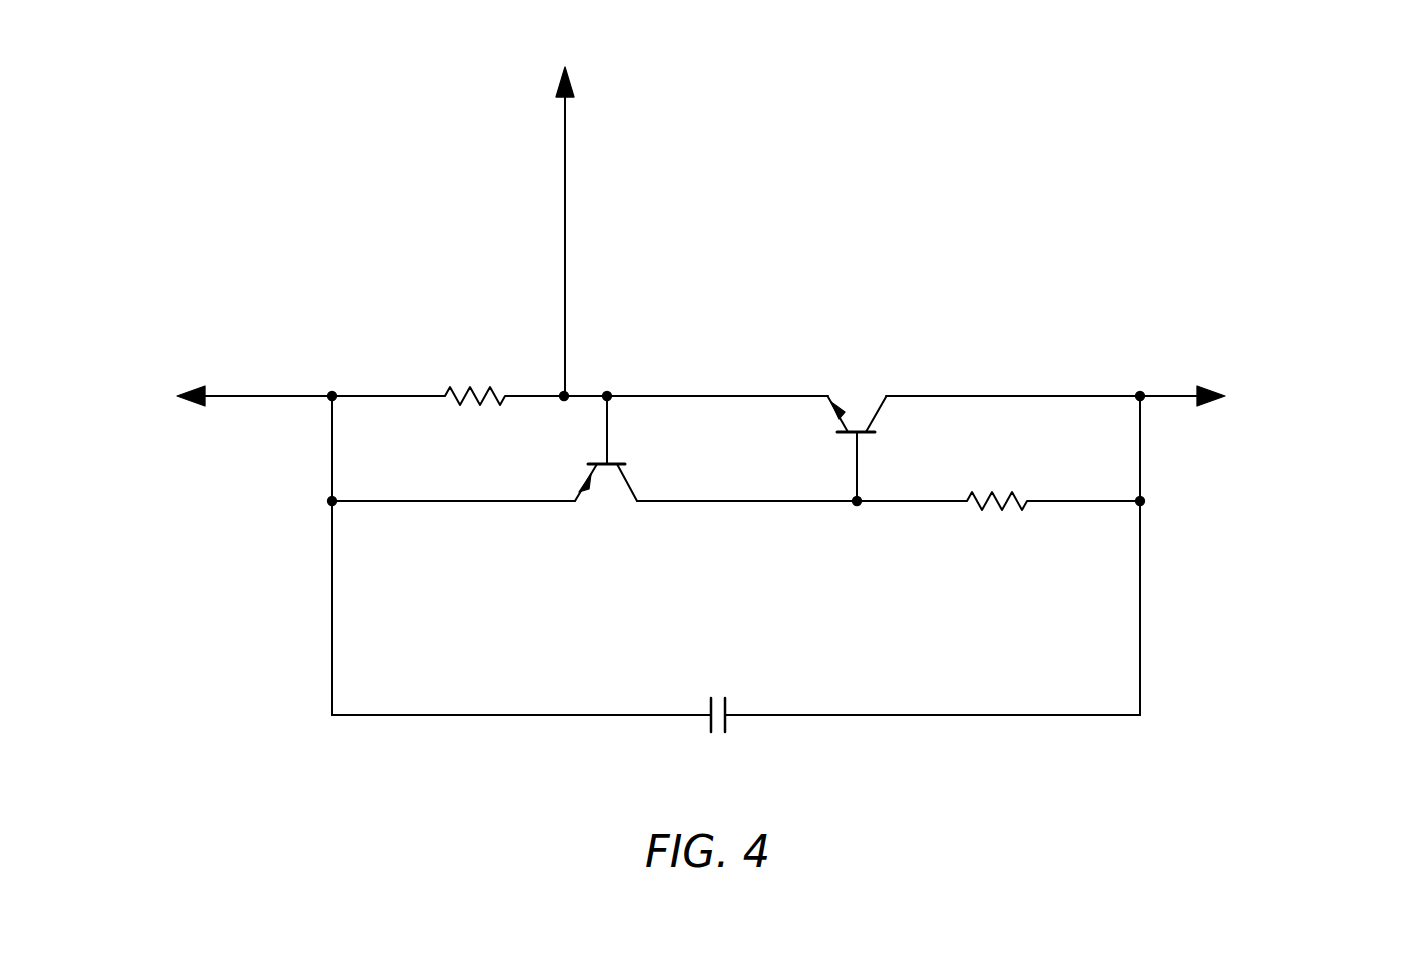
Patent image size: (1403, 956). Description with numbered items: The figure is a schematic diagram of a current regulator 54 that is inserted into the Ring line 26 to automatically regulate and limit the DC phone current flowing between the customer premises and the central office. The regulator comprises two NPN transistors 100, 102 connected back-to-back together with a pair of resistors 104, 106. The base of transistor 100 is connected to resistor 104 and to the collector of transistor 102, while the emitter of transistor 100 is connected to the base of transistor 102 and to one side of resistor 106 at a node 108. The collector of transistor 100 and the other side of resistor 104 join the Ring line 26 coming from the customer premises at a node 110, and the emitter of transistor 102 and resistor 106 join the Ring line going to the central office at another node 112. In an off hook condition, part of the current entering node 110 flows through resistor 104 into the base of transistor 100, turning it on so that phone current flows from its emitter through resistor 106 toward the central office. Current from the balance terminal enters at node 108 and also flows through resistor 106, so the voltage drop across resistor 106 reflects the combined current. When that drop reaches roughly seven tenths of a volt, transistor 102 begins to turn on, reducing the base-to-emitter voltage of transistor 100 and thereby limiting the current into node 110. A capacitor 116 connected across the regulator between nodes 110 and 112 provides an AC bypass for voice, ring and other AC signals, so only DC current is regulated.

The current regulator 54 is at (922, 204).
The Ring line 26 is at (222, 395).
The node 112 is at (333, 395).
The resistor 106 is at (468, 394).
The node 108 is at (566, 394).
The transistor 102 is at (600, 508).
The transistor 100 is at (868, 385).
The resistor 104 is at (997, 505).
The node 110 is at (1142, 396).
The capacitor 116 is at (726, 699).